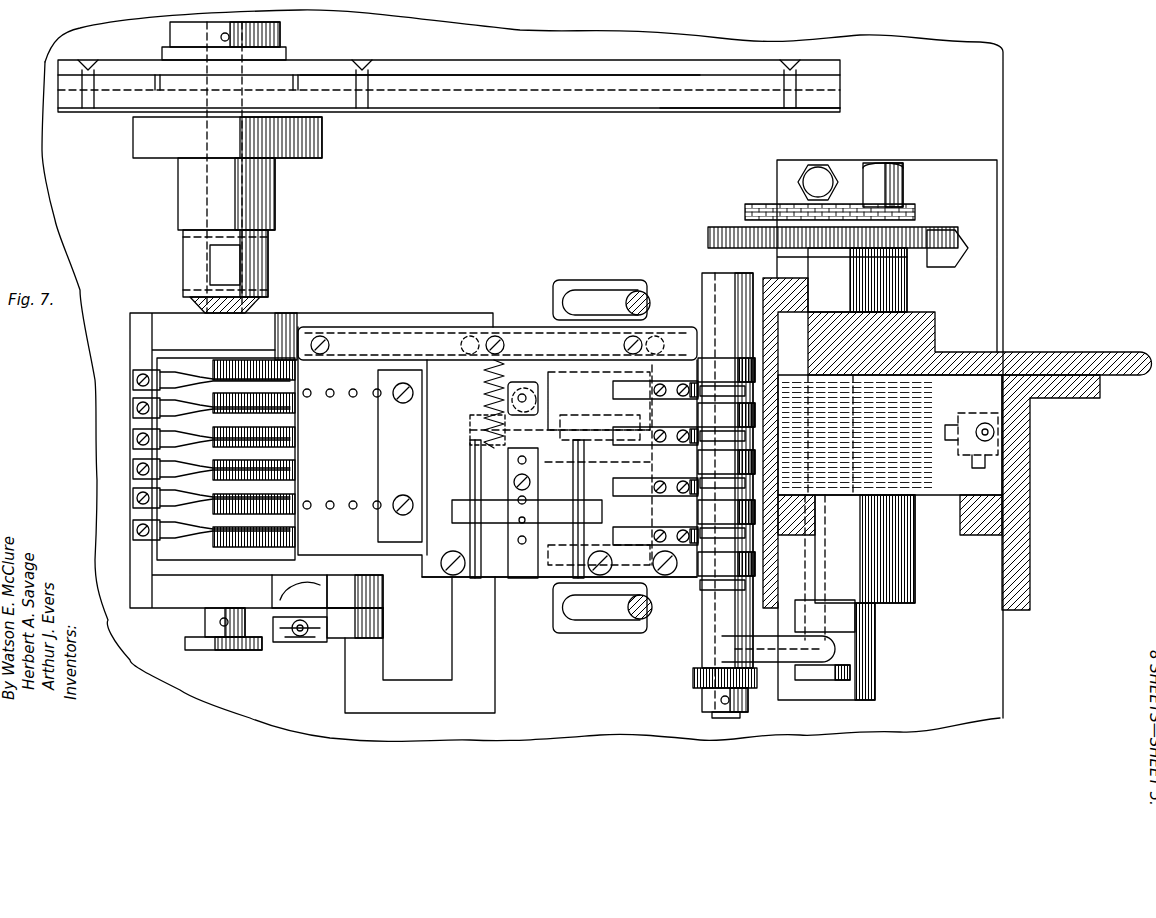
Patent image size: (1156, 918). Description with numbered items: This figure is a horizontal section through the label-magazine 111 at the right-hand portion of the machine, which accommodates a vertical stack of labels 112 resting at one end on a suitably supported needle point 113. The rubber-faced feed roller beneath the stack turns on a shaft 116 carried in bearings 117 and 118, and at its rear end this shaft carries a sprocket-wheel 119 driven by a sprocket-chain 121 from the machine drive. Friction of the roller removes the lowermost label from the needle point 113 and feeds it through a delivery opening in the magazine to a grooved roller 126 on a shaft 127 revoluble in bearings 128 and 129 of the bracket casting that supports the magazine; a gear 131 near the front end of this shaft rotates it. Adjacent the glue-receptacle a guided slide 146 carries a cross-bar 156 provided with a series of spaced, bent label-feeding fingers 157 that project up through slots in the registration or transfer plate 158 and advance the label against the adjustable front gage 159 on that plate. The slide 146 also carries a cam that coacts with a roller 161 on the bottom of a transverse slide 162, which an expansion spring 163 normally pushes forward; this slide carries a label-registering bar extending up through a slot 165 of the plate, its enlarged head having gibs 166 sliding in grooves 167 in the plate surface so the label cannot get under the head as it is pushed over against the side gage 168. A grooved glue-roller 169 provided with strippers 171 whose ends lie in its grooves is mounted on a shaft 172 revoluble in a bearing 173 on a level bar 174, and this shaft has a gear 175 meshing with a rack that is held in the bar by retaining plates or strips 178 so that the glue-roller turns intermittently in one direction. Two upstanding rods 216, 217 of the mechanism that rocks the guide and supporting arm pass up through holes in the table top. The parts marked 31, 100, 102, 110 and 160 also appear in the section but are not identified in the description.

The base plate 31 is at (907, 50).
The bracket 100 is at (487, 632).
The gear 102 is at (926, 232).
The cylinder 110 is at (880, 556).
The label-magazine 111 is at (985, 375).
The labels 112 is at (890, 435).
The needle point 113 is at (990, 434).
The shaft 116 is at (912, 604).
The bearing 117 is at (862, 282).
The bearing 118 is at (857, 650).
The sprocket-wheel 119 is at (910, 210).
The sprocket-chain 121 is at (762, 204).
The grooved roller 126 is at (726, 474).
The shaft 127 is at (727, 718).
The bearing 128 is at (702, 288).
The bearing 129 is at (708, 628).
The gear 131 is at (752, 688).
The slide 146 is at (574, 427).
The cross-bar 156 is at (645, 463).
The label-feeding fingers 157 is at (708, 348).
The registration or transfer plate 158 is at (552, 390).
The front gage 159 is at (385, 453).
The slide block 160 is at (556, 512).
The roller 161 is at (521, 380).
The transverse slide 162 is at (546, 433).
The expansion spring 163 is at (484, 386).
The slot 165 is at (548, 578).
The gibs 166 is at (470, 514).
The grooves 167 is at (472, 472).
The side gage 168 is at (420, 336).
The glue-roller 169 is at (268, 386).
The strippers 171 is at (170, 372).
The shaft 172 is at (228, 352).
The bearing 173 is at (288, 137).
The level bar 174 is at (611, 78).
The gear 175 is at (314, 68).
The retaining plates or strips 178 is at (704, 70).
The upstanding rod 216 is at (612, 605).
The upstanding rod 217 is at (610, 300).